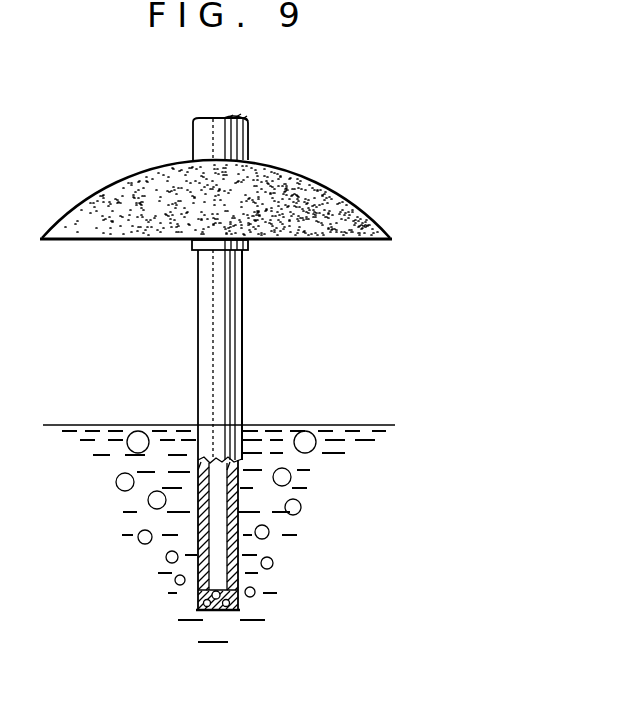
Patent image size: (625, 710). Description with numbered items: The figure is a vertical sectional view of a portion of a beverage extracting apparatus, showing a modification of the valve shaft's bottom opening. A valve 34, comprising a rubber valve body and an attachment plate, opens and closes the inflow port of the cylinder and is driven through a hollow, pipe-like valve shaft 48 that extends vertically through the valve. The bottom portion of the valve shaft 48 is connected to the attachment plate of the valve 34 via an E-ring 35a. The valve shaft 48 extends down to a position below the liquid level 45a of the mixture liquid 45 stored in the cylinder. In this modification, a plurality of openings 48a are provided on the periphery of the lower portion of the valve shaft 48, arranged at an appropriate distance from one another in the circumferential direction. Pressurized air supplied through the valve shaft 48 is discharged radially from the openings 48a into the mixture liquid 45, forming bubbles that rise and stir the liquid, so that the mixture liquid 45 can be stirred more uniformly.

The valve 34 is at (342, 190).
The valve shaft 48 is at (247, 143).
The E-ring 35a is at (247, 245).
The openings 48a is at (198, 594).
The liquid level 45a is at (397, 425).
The mixture liquid 45 is at (328, 457).